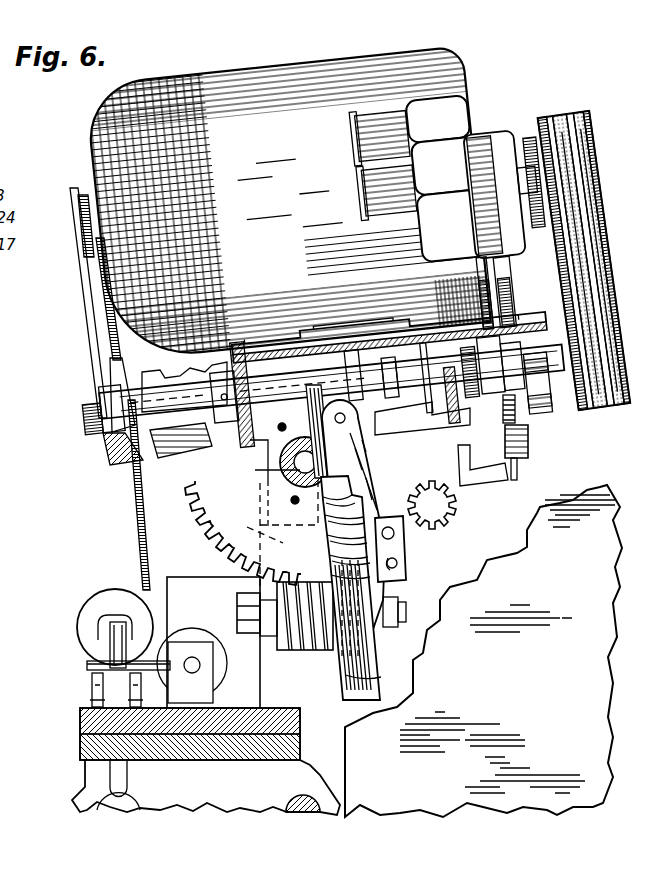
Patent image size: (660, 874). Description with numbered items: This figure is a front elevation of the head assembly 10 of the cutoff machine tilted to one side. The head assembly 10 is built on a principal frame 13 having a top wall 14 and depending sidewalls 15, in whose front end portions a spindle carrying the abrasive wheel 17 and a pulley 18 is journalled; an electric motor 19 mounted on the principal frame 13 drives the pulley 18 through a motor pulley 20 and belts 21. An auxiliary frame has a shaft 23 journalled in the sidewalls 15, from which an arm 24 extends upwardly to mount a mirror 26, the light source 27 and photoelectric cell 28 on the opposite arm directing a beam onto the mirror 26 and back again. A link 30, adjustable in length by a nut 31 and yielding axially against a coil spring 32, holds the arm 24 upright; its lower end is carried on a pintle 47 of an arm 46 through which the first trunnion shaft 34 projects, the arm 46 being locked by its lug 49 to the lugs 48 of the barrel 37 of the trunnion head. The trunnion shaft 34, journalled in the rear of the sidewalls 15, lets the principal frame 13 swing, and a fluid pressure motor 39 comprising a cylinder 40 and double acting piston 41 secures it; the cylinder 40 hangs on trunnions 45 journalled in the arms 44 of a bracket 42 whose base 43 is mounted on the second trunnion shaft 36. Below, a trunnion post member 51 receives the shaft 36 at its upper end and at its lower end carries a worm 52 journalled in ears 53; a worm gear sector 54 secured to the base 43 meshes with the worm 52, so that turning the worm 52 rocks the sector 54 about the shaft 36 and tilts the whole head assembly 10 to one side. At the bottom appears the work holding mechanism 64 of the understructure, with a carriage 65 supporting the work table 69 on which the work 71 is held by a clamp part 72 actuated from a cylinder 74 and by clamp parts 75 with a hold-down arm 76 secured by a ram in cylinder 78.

The head assembly 10 is at (288, 202).
The principal frame 13 is at (325, 345).
The top wall 14 is at (266, 330).
The sidewalls 15 is at (247, 427).
The abrasive wheel 17 is at (135, 533).
The pulley 18 is at (566, 320).
The electric motor 19 is at (232, 105).
The motor pulley 20 is at (602, 172).
The belts 21 is at (585, 268).
The shaft 23 is at (180, 400).
The arm 24 is at (86, 308).
The mirror 26 is at (508, 280).
The light source 27 is at (362, 142).
The photoelectric cell 28 is at (366, 190).
The link 30 is at (508, 420).
The nut 31 is at (528, 437).
The coil spring 32 is at (505, 438).
The first trunnion shaft 34 is at (428, 382).
The second trunnion shaft 36 is at (280, 457).
The barrel 37 is at (388, 382).
The fluid pressure motor 39 is at (366, 520).
The cylinder 40 is at (388, 642).
The double acting piston 41 is at (303, 378).
The bracket 42 is at (360, 455).
The base 43 is at (255, 469).
The arms 44 is at (368, 480).
The trunnions 45 is at (408, 548).
The arm 46 is at (450, 490).
The pintle 47 is at (484, 470).
The lugs 48 is at (432, 434).
The lug 49 is at (370, 446).
The trunnion post member 51 is at (265, 532).
The worm 52 is at (312, 650).
The ears 53 is at (250, 613).
The worm gear sector 54 is at (215, 530).
The work holding mechanism 64 is at (292, 805).
The carriage 65 is at (92, 773).
The work table 69 is at (92, 723).
The work 71 is at (92, 667).
The clamp part 72 is at (205, 668).
The cylinder 74 is at (228, 660).
The clamp parts 75 is at (135, 688).
The hold-down arm 76 is at (112, 643).
The cylinder 78 is at (92, 612).